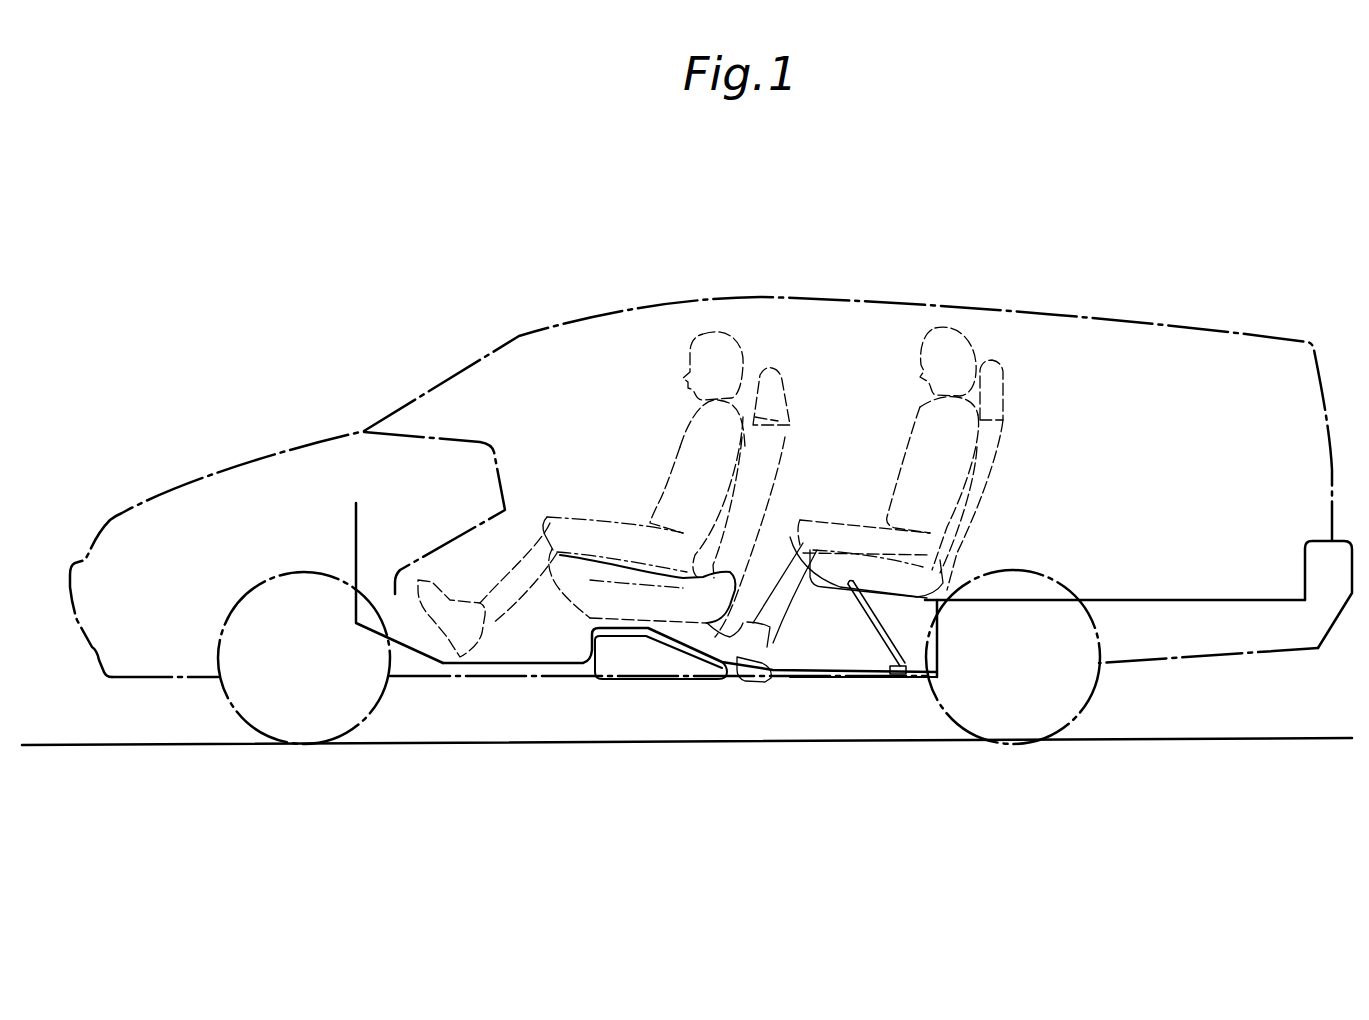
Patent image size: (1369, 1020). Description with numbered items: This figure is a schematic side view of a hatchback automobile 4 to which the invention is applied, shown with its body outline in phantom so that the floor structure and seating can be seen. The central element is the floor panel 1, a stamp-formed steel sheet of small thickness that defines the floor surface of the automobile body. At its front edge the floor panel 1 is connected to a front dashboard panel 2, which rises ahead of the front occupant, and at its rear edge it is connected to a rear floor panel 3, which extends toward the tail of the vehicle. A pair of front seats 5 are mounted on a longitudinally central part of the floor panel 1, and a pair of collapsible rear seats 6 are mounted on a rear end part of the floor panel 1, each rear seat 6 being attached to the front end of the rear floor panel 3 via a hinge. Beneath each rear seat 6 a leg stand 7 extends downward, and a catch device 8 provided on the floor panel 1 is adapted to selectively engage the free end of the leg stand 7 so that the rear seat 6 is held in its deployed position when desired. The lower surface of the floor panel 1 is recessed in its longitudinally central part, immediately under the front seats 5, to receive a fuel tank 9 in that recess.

The floor panel 1 is at (495, 663).
The front dashboard panel 2 is at (356, 527).
The rear floor panel 3 is at (1204, 598).
The vehicle 4 is at (262, 322).
The front seats 5 is at (788, 453).
The collapsible rear seats 6 is at (990, 473).
The leg stand 7 is at (877, 620).
The catch device 8 is at (880, 680).
The fuel tank 9 is at (655, 680).